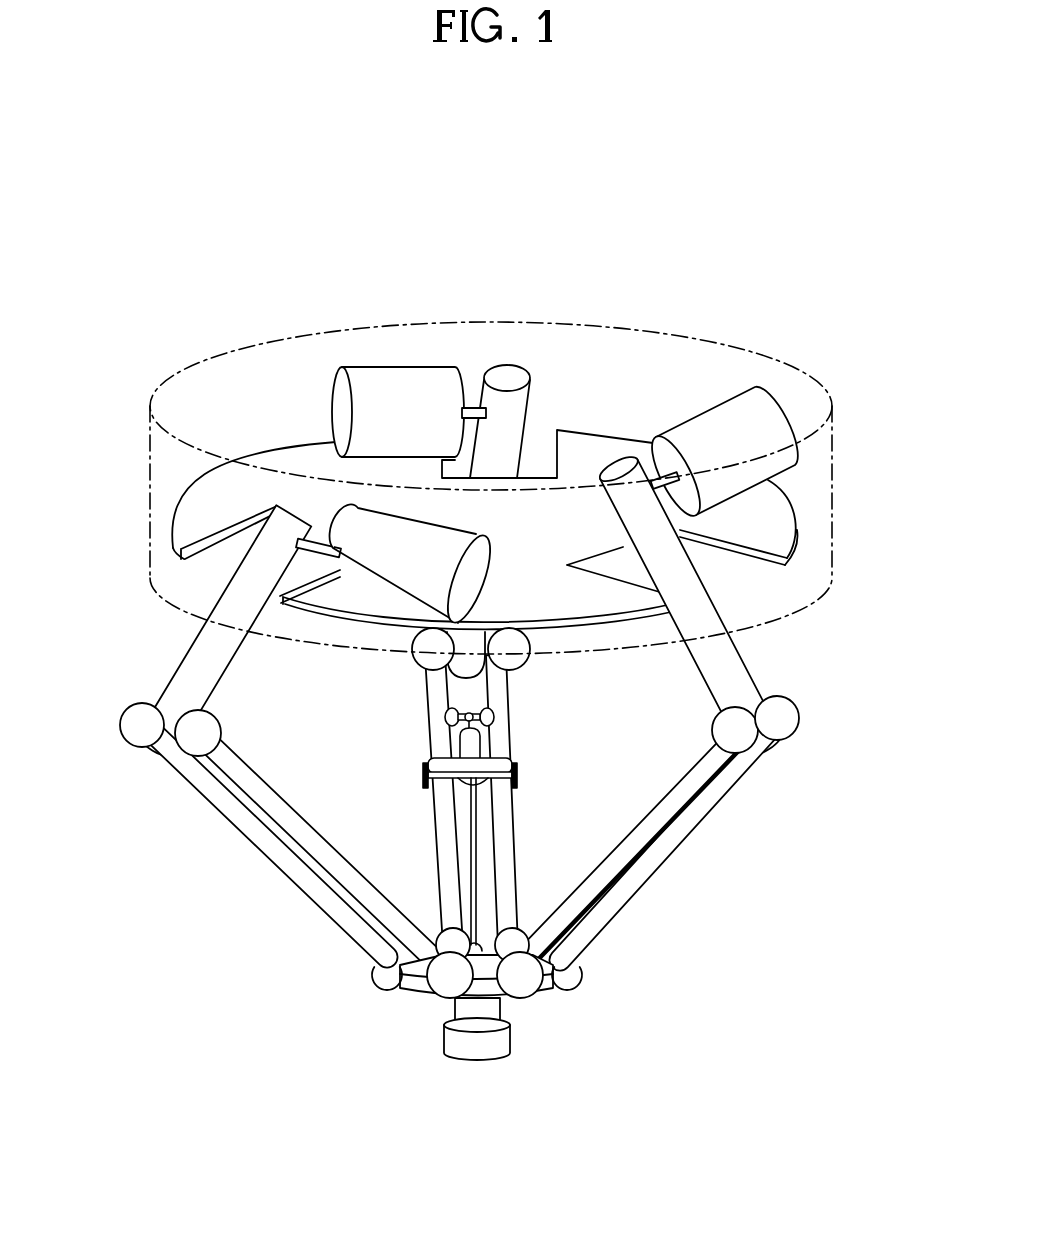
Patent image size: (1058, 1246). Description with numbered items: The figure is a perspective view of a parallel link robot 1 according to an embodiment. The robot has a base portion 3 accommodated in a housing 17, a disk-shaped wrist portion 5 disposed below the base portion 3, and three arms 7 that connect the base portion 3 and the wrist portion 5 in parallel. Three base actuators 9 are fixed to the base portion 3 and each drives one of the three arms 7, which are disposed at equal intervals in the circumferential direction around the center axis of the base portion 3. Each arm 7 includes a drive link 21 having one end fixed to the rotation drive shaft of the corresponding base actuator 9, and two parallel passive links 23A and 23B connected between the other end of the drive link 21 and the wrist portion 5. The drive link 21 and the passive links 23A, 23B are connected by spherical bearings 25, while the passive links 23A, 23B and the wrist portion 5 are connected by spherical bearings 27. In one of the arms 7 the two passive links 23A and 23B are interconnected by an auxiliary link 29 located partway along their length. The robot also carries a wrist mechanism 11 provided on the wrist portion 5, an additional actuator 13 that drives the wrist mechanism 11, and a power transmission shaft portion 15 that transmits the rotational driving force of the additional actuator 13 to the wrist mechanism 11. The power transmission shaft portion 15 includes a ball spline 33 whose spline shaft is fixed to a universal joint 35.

The parallel link robot 1 is at (262, 205).
The base portion 3 is at (775, 497).
The wrist portion 5 is at (405, 990).
The arm 7 is at (538, 682).
The base actuator 9 is at (398, 378).
The wrist mechanism 11 is at (478, 1060).
The additional actuator 13 is at (463, 746).
The power transmission shaft portion 15 is at (445, 830).
The housing 17 is at (832, 546).
The drive link 21 is at (508, 392).
The passive link 23A is at (437, 707).
The passive link 23B is at (502, 711).
The spherical bearing 25 is at (516, 643).
The spherical bearing 27 is at (437, 927).
The auxiliary link 29 is at (507, 770).
The ball spline 33 is at (473, 818).
The universal joint 35 is at (465, 937).